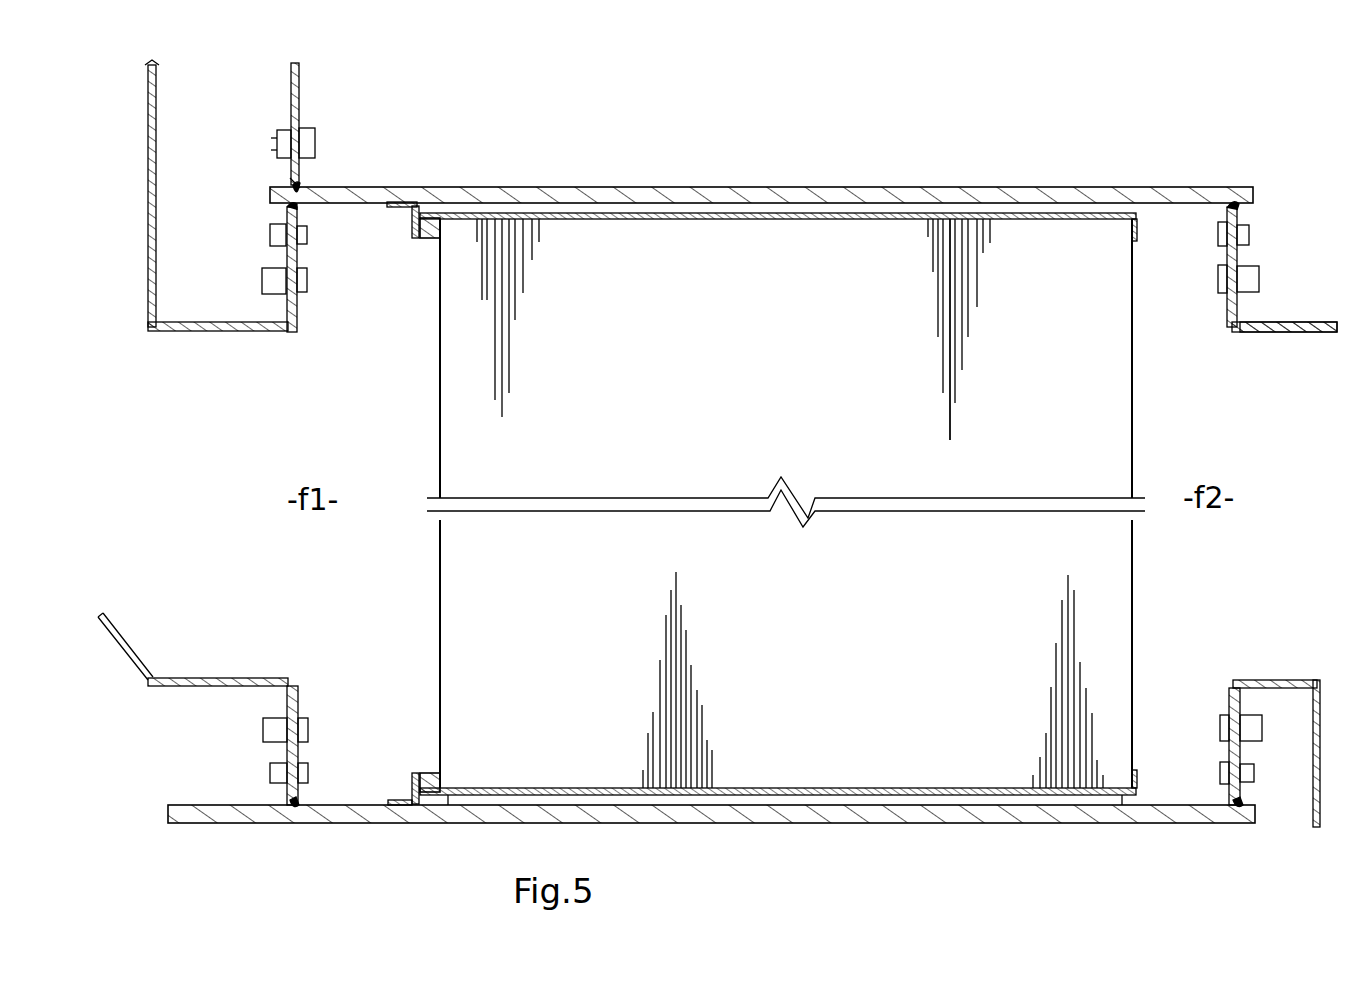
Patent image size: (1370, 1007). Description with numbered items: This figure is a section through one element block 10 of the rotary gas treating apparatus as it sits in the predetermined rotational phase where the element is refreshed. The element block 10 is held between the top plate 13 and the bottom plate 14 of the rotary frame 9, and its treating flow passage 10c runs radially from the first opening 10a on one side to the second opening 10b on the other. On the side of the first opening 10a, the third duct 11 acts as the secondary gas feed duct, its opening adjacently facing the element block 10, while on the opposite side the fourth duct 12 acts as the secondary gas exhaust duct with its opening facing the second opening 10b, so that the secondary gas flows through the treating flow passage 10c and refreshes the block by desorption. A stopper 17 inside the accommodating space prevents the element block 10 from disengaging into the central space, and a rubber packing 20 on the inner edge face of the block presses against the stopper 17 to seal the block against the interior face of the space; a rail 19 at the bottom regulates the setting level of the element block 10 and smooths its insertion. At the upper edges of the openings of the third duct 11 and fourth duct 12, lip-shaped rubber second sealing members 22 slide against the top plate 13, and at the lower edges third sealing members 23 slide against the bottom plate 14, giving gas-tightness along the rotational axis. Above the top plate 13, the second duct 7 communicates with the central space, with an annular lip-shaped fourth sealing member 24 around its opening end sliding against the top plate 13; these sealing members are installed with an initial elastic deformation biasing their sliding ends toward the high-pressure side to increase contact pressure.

The second duct 7 is at (292, 68).
The rotary frame 9 is at (591, 186).
The element block 10 is at (438, 421).
The first opening 10a is at (424, 596).
The second opening 10b is at (1152, 589).
The treating flow passage 10c is at (922, 418).
The third duct 11 is at (147, 678).
The fourth duct 12 is at (1325, 325).
The top plate 13 is at (800, 186).
The bottom plate 14 is at (800, 824).
The stopper 17 is at (410, 218).
The rail 19 is at (572, 795).
The rubber packing 20 is at (428, 773).
The second sealing member 22 is at (287, 212).
The third sealing member 23 is at (287, 800).
The fourth sealing member 24 is at (308, 181).